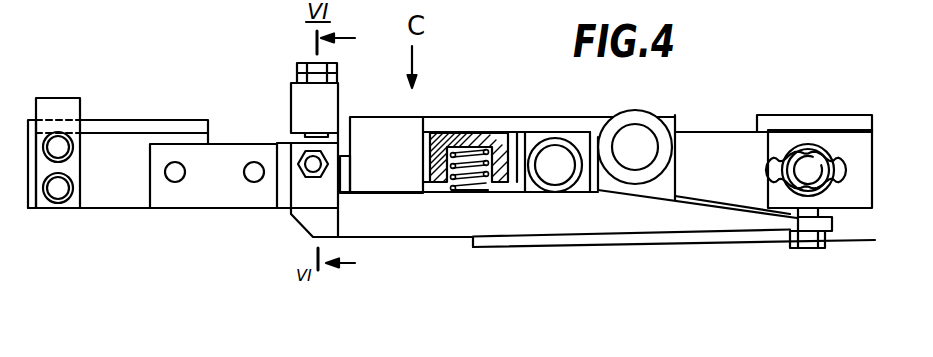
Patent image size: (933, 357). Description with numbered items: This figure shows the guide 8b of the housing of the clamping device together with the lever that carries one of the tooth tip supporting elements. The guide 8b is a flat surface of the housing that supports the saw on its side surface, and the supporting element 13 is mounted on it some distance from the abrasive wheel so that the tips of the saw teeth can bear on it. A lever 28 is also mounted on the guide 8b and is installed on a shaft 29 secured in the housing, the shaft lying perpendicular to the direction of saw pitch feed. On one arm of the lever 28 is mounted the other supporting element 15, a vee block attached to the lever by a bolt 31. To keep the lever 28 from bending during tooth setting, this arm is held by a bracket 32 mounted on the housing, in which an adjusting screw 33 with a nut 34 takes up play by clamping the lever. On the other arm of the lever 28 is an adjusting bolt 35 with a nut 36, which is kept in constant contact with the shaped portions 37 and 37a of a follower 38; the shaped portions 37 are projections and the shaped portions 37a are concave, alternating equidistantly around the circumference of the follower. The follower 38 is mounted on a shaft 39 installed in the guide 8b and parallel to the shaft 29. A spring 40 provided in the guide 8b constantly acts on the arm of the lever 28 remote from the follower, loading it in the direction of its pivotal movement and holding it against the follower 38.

The tooth tip supporting element 13 is at (55, 105).
The guide 8b is at (108, 142).
The bracket 32 is at (217, 152).
The adjusting screw 33 is at (310, 163).
The nut 34 is at (307, 177).
The bolt 31 is at (298, 72).
The supporting element 15 is at (339, 95).
The spring 40 is at (462, 130).
The shaft 29 is at (556, 150).
The lever 28 is at (458, 222).
The follower 38 is at (790, 140).
The shaft 39 is at (810, 167).
The shaped portions 37 is at (843, 190).
The shaped portions 37a is at (848, 203).
The adjusting bolt 35 is at (798, 248).
The nut 36 is at (822, 245).